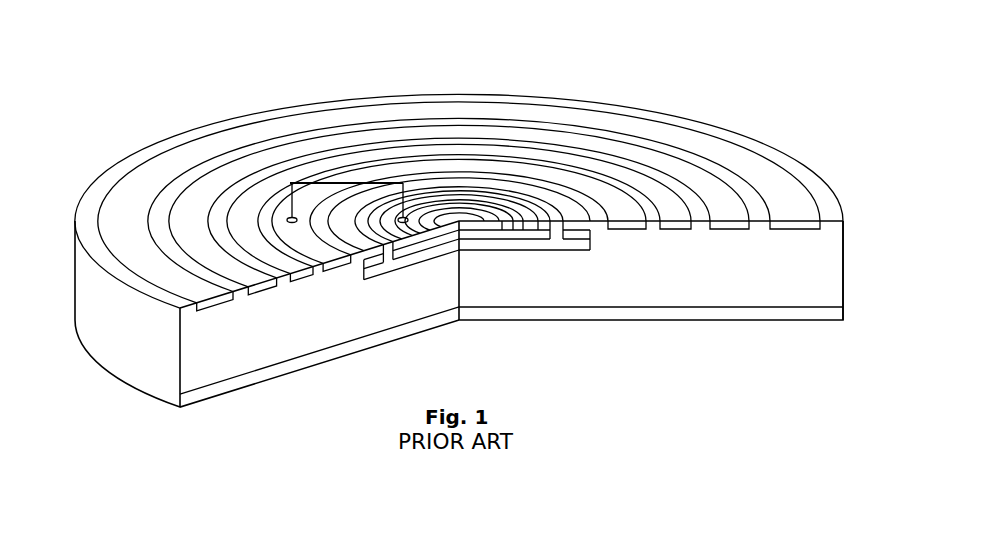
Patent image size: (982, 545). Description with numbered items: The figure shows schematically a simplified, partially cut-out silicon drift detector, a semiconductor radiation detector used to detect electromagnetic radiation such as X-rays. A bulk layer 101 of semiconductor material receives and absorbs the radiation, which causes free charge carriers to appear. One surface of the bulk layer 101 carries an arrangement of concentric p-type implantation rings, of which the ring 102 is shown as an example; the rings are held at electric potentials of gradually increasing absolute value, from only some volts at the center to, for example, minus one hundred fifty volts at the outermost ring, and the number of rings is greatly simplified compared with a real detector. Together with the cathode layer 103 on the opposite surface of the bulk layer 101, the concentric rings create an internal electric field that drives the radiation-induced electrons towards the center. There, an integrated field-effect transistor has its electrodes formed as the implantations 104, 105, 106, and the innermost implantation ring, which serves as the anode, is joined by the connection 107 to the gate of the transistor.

The bulk layer 101 is at (782, 187).
The ring 102 is at (667, 203).
The cathode layer 103 is at (782, 318).
The implantation 104 is at (464, 212).
The implantation 105 is at (503, 214).
The implantation 106 is at (539, 216).
The connection 107 is at (353, 183).